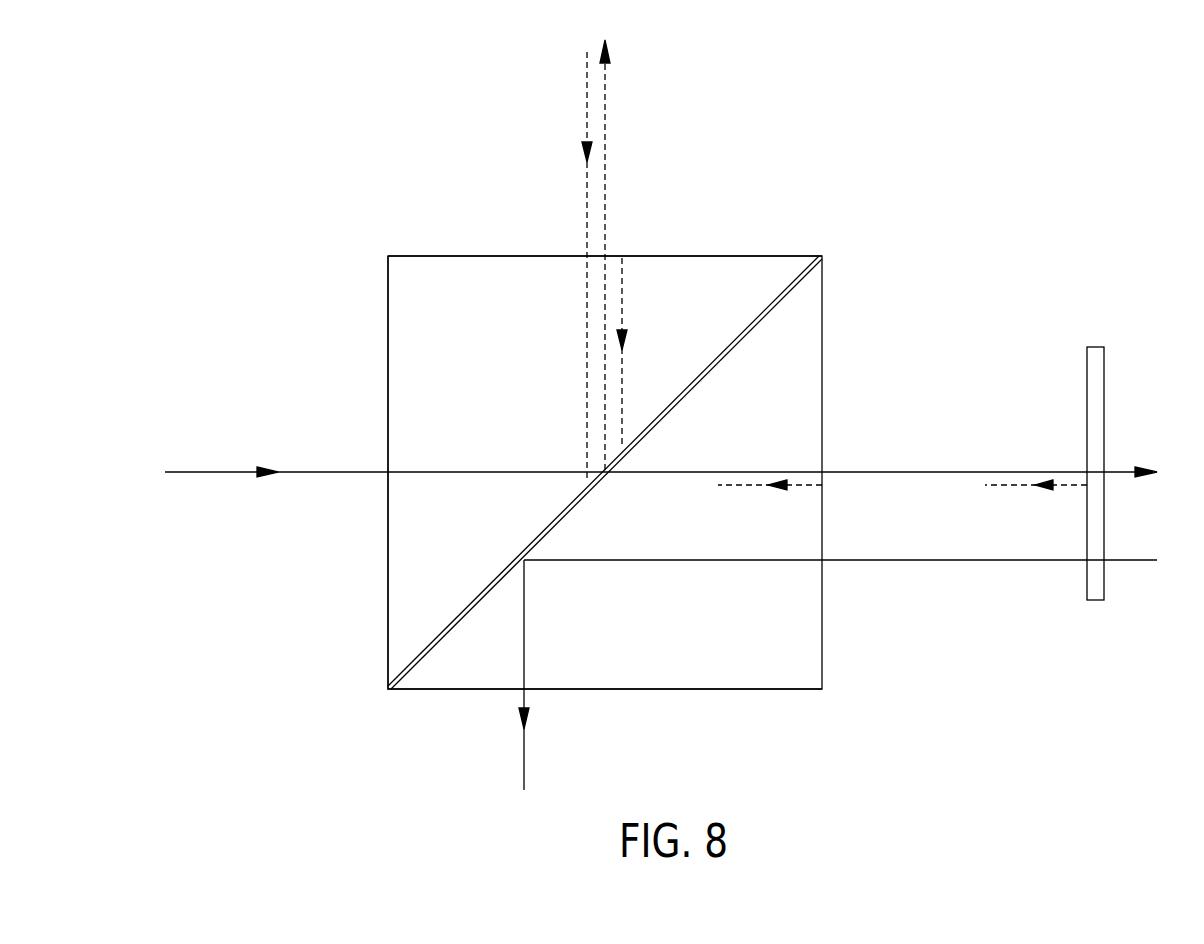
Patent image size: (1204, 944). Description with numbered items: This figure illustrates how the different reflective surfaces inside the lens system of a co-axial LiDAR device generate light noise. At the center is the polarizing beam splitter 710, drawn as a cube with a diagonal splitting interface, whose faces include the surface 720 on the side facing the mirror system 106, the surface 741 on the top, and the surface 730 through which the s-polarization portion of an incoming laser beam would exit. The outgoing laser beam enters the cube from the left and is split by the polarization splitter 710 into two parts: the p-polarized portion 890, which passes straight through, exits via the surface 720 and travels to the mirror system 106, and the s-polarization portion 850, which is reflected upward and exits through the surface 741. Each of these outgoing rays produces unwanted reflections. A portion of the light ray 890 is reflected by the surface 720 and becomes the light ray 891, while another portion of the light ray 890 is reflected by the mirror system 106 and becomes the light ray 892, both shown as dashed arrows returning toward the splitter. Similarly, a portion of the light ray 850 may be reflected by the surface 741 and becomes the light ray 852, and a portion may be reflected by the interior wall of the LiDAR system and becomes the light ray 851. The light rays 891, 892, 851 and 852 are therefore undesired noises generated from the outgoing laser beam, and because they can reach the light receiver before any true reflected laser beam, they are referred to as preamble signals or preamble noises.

The surface 720 is at (823, 319).
The surface 741 is at (714, 257).
The surface 730 is at (490, 660).
The beam splitter 710 is at (666, 419).
The mirror system 106 is at (1105, 375).
The p-polarized portion 890 is at (1128, 472).
The light ray 891 is at (743, 488).
The light ray 892 is at (1000, 487).
The s-polarization portion 850 is at (605, 108).
The light ray 851 is at (587, 110).
The light ray 852 is at (620, 273).